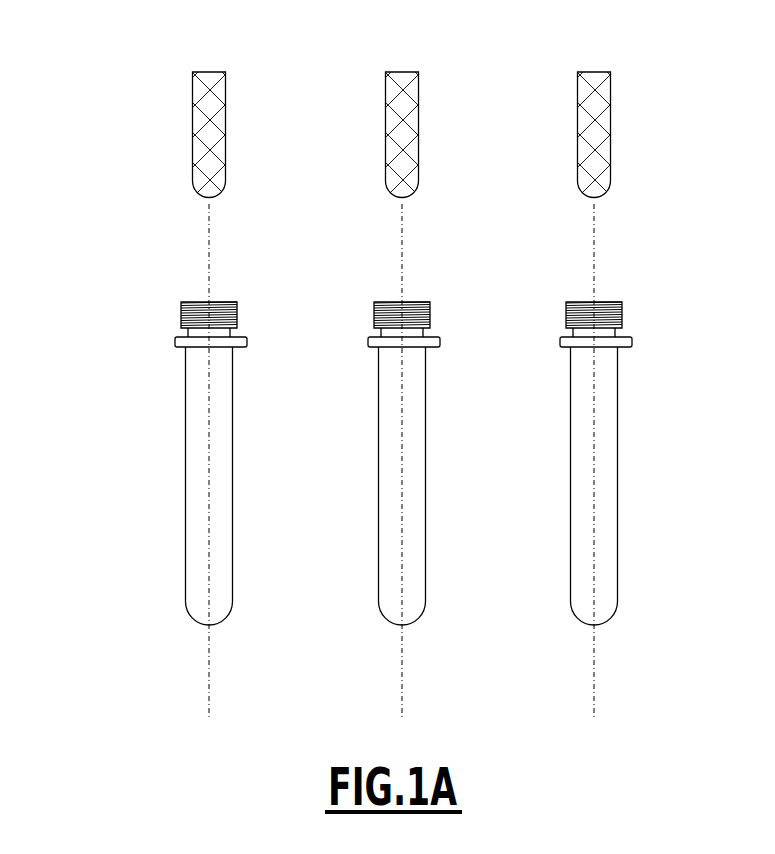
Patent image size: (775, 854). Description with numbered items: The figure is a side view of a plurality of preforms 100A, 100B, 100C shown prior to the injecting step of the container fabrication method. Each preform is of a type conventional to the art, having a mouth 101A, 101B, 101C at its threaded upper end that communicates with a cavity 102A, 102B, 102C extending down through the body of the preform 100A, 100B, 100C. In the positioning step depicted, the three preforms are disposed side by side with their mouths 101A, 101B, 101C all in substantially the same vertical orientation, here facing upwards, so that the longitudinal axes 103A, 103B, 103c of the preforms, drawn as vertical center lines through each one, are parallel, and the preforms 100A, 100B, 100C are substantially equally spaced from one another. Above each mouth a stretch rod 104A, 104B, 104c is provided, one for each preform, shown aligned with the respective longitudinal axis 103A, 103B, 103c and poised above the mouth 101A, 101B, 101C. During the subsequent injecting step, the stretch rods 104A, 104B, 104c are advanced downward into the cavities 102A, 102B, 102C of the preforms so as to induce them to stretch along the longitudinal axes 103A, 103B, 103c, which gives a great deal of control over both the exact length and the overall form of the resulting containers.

The preform 100A is at (213, 469).
The preform 100B is at (406, 469).
The preform 100C is at (598, 469).
The mouth 101A is at (224, 301).
The mouth 101B is at (437, 304).
The mouth 101C is at (629, 304).
The cavity 102A is at (218, 472).
The cavity 102B is at (444, 486).
The cavity 102C is at (637, 486).
The longitudinal axis 103A is at (209, 232).
The longitudinal axis 103B is at (451, 460).
The longitudinal axis 103c is at (641, 460).
The stretch rod 104A is at (218, 82).
The stretch rod 104B is at (446, 126).
The stretch rod 104c is at (637, 126).